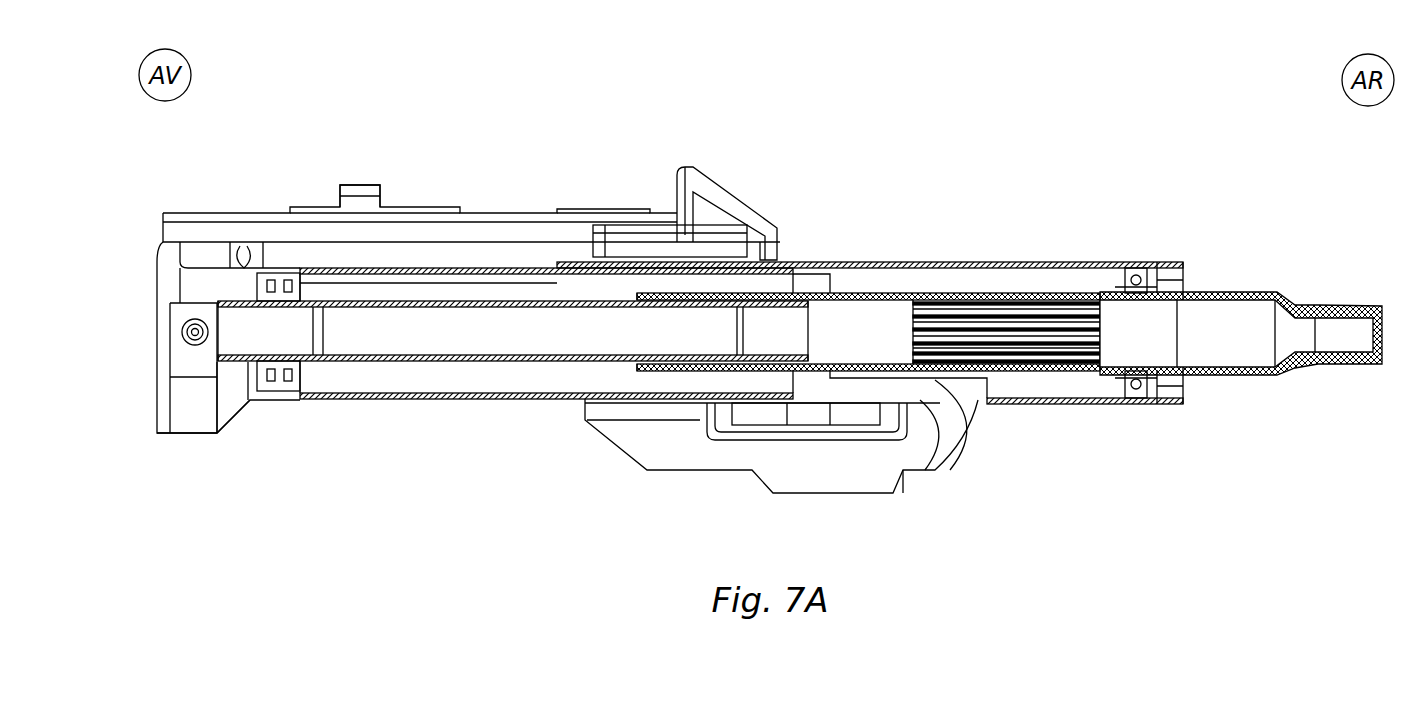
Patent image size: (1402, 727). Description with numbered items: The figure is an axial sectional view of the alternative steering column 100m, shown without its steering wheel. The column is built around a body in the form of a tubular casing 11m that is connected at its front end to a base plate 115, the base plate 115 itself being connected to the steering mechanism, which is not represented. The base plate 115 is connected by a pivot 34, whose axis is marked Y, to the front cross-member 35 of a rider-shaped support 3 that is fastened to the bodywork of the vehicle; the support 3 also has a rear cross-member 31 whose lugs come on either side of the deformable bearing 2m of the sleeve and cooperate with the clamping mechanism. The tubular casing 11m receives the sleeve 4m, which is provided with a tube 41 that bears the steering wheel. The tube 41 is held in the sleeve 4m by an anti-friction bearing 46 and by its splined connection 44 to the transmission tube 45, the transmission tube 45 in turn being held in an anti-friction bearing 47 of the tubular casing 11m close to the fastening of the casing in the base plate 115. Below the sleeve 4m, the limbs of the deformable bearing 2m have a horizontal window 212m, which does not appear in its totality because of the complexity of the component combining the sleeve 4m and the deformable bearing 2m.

The support 3 is at (485, 116).
The front cross-member 35 is at (370, 183).
The rear cross-member 31 is at (700, 180).
The pivot 34 is at (206, 372).
The base plate 115 is at (228, 415).
The axis Y is at (192, 335).
The transmission tube 45 is at (556, 362).
The anti-friction bearing 47 is at (290, 388).
The tubular casing 11m is at (462, 400).
The sleeve 4m is at (1040, 264).
The steering column 100m is at (1155, 186).
The splined connection 44 is at (928, 292).
The anti-friction bearing 46 is at (1135, 266).
The tube 41 is at (1262, 290).
The deformable bearing 2m is at (693, 450).
The horizontal window 212m is at (862, 420).